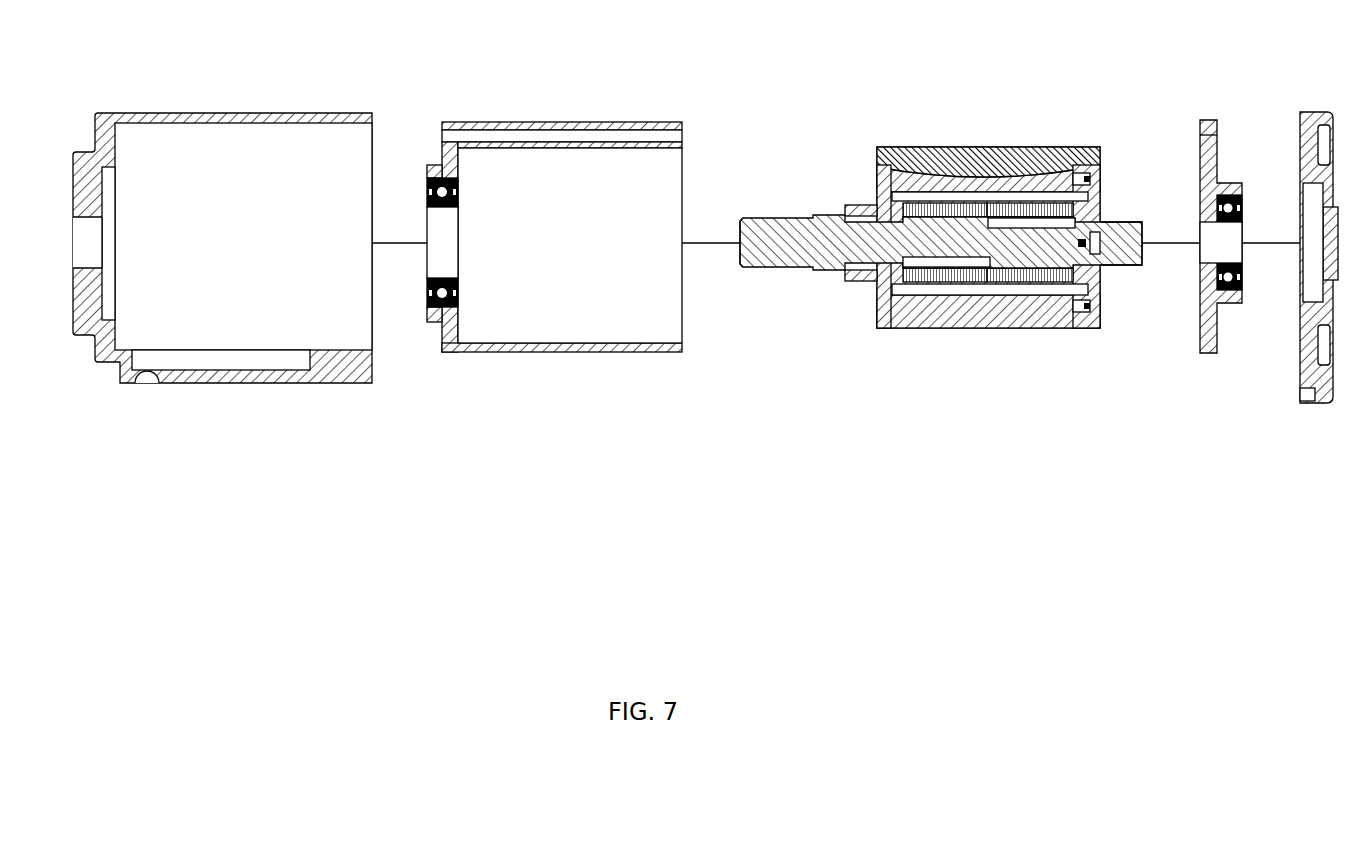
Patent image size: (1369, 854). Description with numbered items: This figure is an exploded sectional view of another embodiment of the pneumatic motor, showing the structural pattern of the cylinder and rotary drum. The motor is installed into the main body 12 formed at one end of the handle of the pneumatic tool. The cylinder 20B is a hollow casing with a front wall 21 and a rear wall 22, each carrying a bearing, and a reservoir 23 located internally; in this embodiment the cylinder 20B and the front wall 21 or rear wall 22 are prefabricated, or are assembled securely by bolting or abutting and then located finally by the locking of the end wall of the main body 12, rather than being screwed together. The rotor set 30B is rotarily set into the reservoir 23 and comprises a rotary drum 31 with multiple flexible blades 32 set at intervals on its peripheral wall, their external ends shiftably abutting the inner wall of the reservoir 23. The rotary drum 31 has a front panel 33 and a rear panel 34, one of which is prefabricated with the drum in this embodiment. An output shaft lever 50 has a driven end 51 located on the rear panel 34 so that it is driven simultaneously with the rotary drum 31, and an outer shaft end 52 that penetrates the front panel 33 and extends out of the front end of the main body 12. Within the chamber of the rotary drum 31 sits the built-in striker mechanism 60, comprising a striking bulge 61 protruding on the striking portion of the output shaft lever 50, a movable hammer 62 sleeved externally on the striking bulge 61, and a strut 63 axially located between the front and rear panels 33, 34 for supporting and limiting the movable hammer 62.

The main body 12 is at (240, 107).
The cylinder 20B is at (538, 241).
The front wall 21 is at (432, 155).
The rear wall 22 is at (1218, 155).
The reservoir 23 is at (543, 305).
The rotor set 30B is at (974, 266).
The rotary drum 31 is at (1033, 178).
The flexible blades 32 is at (1062, 147).
The front panel 33 is at (877, 290).
The rear panel 34 is at (1100, 293).
The output shaft lever 50 is at (940, 229).
The driven end 51 is at (1133, 220).
The outer shaft end 52 is at (740, 250).
The built-in striker mechanism 60 is at (973, 329).
The striking bulge 61 is at (968, 282).
The movable hammer 62 is at (1018, 285).
The strut 63 is at (915, 300).